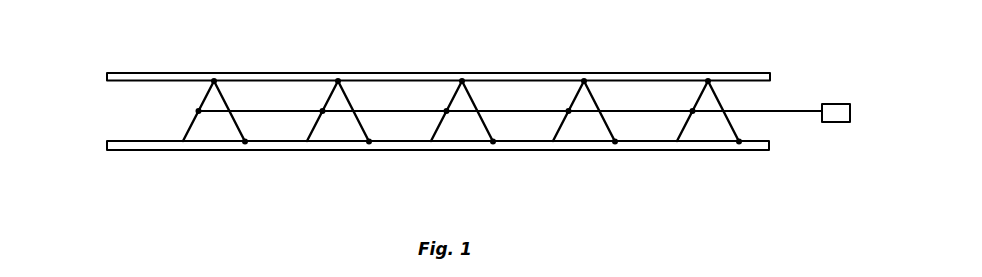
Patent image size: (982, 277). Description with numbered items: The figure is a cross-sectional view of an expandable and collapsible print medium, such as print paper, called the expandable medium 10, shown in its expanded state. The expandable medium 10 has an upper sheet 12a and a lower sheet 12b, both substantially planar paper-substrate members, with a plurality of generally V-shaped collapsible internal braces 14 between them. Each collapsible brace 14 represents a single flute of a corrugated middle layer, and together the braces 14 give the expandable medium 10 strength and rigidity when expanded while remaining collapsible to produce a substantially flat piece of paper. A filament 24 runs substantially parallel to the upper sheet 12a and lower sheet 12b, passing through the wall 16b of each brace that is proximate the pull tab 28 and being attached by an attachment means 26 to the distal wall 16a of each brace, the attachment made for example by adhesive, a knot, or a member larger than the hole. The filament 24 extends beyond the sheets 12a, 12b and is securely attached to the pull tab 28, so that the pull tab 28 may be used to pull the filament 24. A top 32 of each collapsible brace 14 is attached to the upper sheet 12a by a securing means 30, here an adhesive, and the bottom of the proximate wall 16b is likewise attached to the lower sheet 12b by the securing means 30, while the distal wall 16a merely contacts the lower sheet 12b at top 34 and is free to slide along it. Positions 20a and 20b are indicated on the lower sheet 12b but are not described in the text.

The expandable medium 10 is at (213, 48).
The upper sheet 12a is at (107, 76).
The lower sheet 12b is at (107, 146).
The collapsible internal brace 14 is at (190, 128).
The distal wall 16a is at (681, 132).
The proximate wall 16b is at (735, 132).
The first attachment point 20a is at (172, 164).
The second attachment point 20b is at (245, 164).
The filament 24 is at (786, 110).
The attachment means 26 is at (198, 111).
The pull tab 28 is at (841, 115).
The securing means 30 is at (605, 163).
The top 32 is at (708, 81).
The top 34 is at (678, 164).